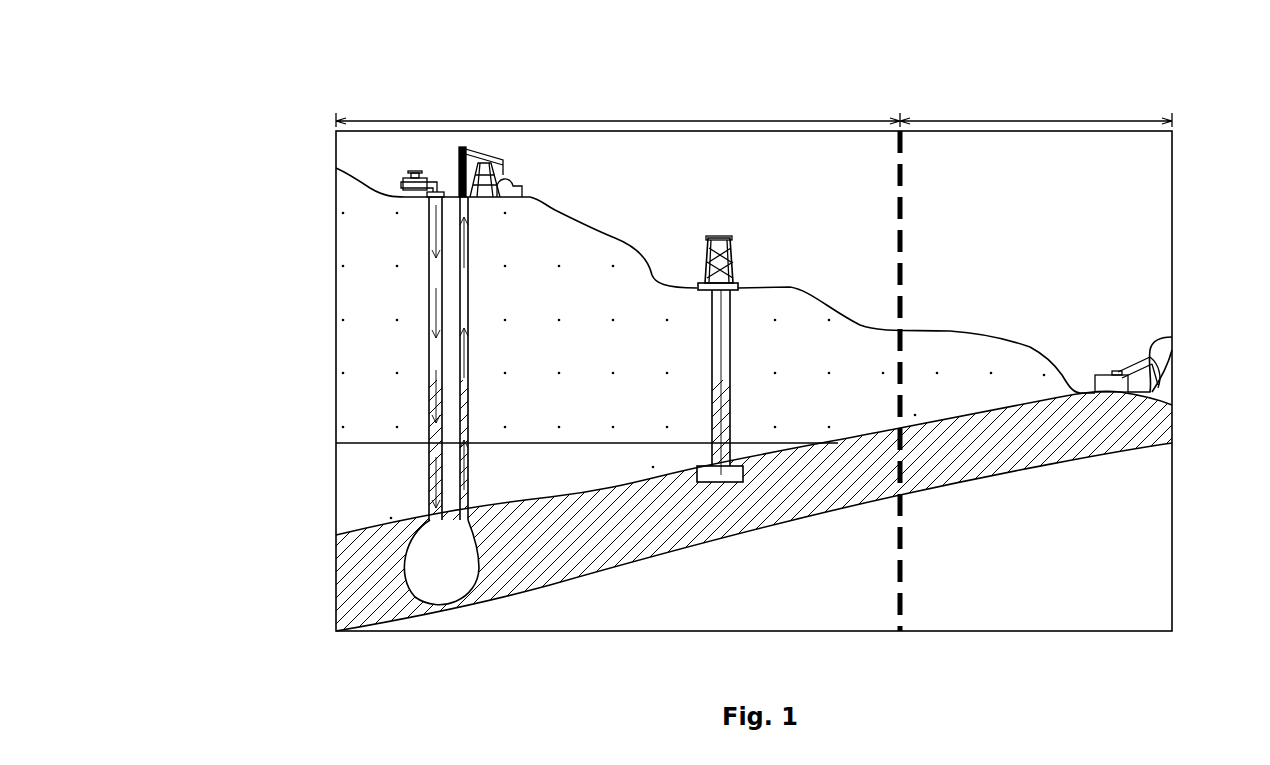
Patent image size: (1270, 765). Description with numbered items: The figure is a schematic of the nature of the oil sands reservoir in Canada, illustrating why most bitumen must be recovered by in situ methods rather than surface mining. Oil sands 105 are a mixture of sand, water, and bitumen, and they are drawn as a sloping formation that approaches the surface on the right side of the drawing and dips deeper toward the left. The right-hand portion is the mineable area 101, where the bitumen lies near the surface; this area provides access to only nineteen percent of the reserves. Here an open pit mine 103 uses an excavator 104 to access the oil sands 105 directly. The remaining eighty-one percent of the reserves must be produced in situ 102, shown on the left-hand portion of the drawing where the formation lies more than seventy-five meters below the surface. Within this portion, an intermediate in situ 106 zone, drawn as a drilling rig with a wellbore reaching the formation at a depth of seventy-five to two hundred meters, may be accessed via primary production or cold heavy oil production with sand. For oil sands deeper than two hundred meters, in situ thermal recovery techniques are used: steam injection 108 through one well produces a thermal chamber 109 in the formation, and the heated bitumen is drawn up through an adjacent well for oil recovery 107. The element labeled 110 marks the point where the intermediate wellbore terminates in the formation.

The mineable area 101 is at (1080, 100).
The in situ area 102 is at (463, 108).
The open pit mine 103 is at (1043, 253).
The excavator 104 is at (1172, 337).
The oil sands 105 is at (1148, 415).
The intermediate in situ 106 is at (822, 350).
The oil recovery 107 is at (491, 325).
The steam injection 108 is at (422, 320).
The thermal chamber 109 is at (418, 582).
The well terminus block 110 is at (722, 482).